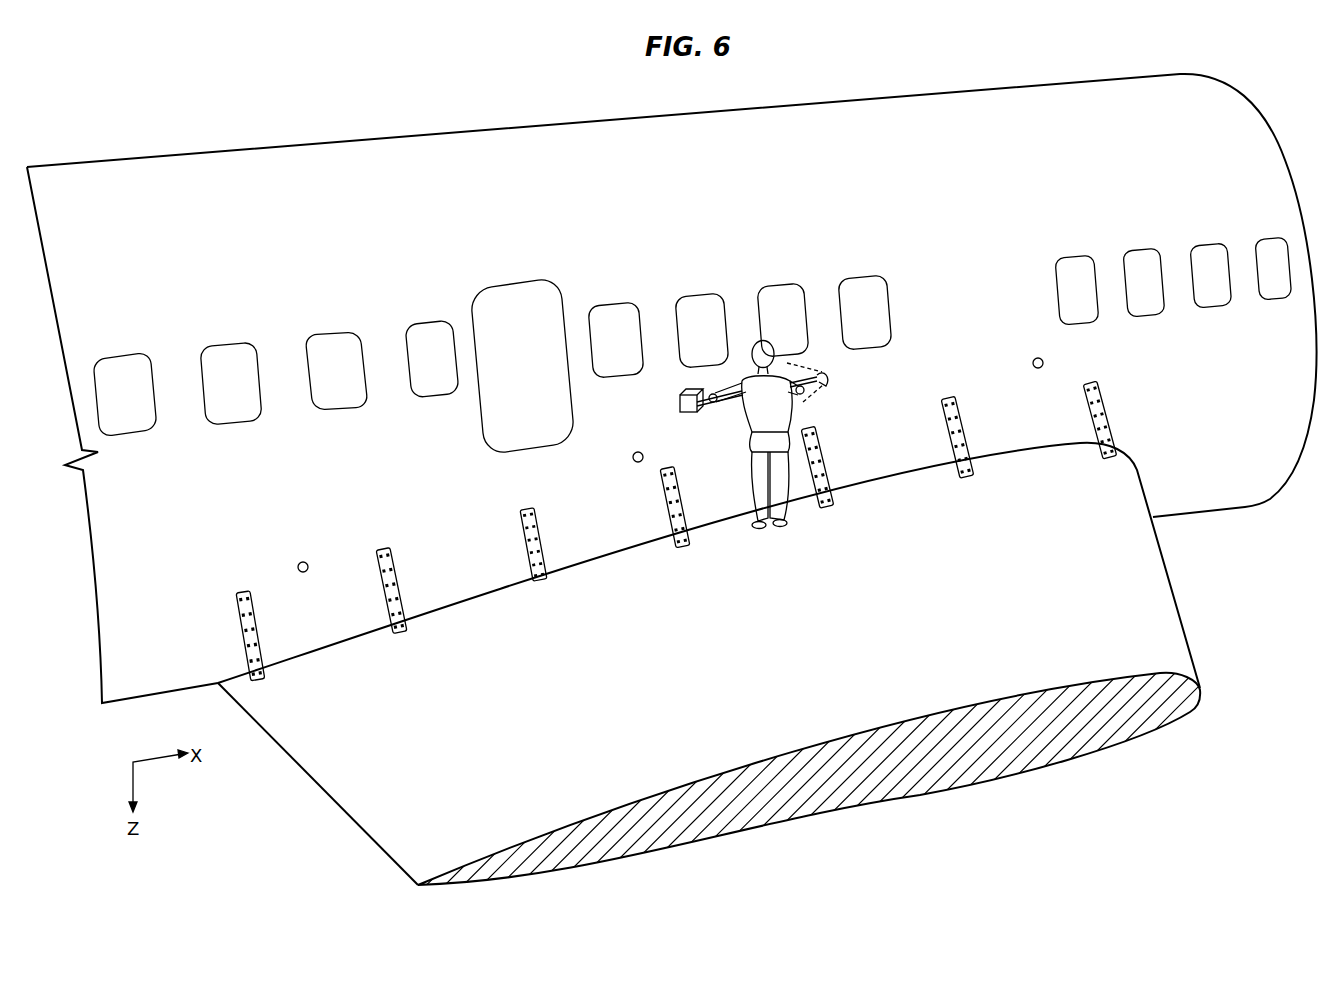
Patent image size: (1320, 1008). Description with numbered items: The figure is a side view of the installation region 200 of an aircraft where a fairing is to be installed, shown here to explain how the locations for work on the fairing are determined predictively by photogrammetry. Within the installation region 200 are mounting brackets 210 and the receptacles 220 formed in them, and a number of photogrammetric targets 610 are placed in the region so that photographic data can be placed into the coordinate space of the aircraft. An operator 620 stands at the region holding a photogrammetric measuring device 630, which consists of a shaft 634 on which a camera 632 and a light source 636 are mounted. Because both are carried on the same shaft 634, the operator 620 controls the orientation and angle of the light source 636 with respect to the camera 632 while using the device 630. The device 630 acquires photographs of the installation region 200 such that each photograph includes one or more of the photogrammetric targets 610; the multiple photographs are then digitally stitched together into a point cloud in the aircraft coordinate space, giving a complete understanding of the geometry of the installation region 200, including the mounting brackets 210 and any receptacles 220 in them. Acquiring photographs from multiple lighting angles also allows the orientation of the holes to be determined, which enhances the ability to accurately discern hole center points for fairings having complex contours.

The installation region 200 is at (1131, 390).
The mounting brackets 210 is at (543, 542).
The receptacles 220 is at (520, 528).
The photogrammetric targets 610 is at (298, 567).
The operator 620 is at (787, 478).
The photogrammetric measuring device 630 is at (753, 419).
The camera 632 is at (678, 406).
The shaft 634 is at (720, 392).
The light source 636 is at (827, 380).